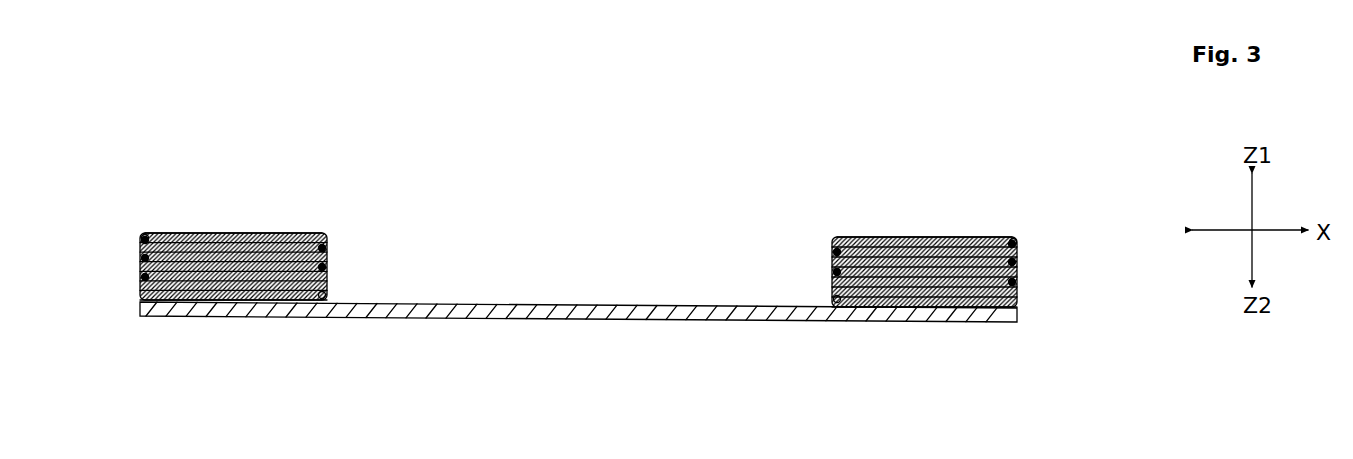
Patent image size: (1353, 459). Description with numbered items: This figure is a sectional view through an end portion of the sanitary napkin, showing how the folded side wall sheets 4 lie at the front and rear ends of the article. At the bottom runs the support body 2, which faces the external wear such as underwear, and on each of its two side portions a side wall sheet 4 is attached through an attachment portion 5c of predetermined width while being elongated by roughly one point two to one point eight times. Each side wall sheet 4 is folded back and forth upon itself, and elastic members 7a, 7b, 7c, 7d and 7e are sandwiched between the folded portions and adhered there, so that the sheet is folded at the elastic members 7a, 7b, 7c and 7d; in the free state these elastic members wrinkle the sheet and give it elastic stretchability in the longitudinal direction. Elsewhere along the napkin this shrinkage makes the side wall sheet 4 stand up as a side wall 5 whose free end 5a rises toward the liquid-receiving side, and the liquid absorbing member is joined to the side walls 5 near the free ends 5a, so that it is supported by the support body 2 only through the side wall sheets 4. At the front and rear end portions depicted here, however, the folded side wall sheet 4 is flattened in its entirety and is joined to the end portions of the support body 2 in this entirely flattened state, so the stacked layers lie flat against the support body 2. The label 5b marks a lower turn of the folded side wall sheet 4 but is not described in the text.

The support body 2 is at (612, 303).
The side wall sheet 4 is at (245, 232).
The side wall 5 is at (329, 228).
The free end 5a is at (145, 233).
The wire lower turn portion 5b is at (327, 295).
The attachment portion 5c is at (178, 304).
The elastic member 7a is at (140, 278).
The elastic member 7b is at (327, 267).
The elastic member 7c is at (140, 257).
The elastic member 7d is at (328, 244).
The elastic member 7e is at (140, 238).